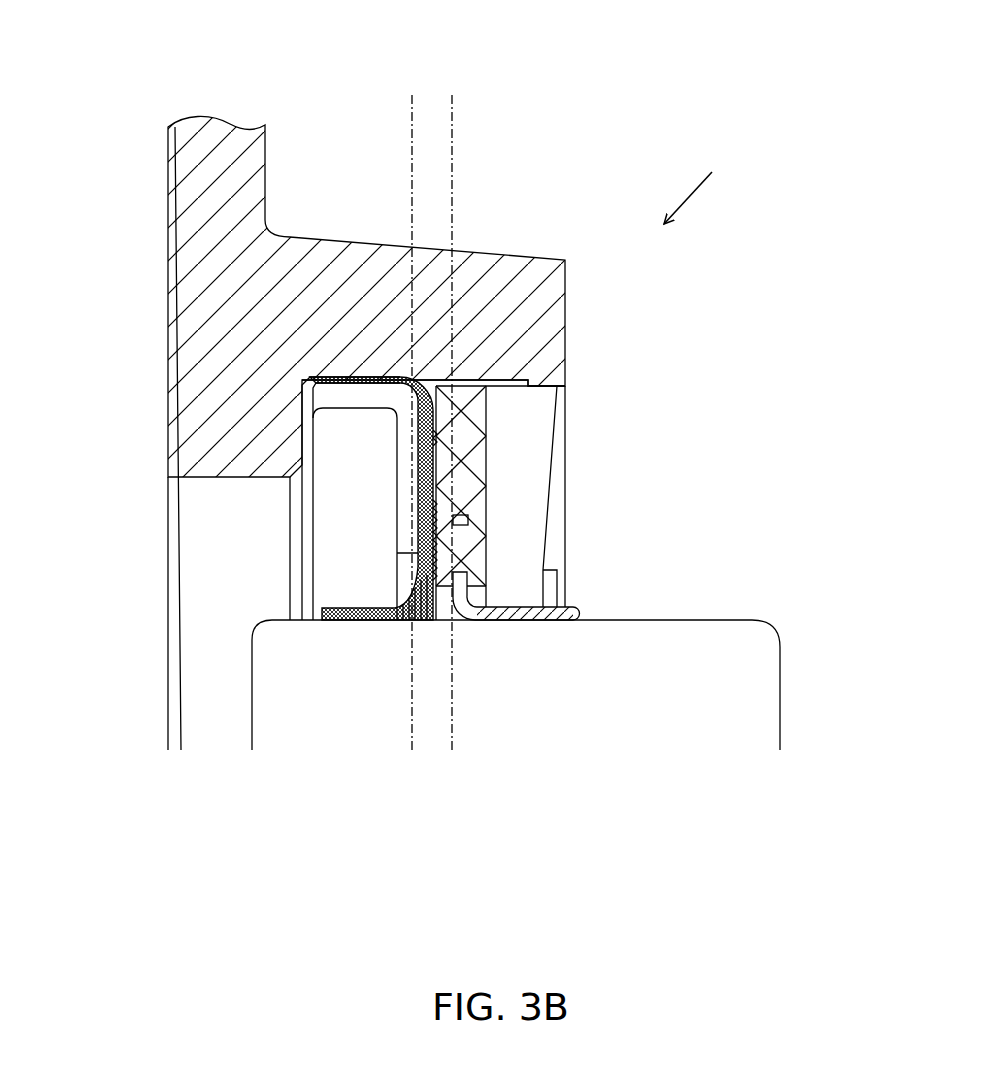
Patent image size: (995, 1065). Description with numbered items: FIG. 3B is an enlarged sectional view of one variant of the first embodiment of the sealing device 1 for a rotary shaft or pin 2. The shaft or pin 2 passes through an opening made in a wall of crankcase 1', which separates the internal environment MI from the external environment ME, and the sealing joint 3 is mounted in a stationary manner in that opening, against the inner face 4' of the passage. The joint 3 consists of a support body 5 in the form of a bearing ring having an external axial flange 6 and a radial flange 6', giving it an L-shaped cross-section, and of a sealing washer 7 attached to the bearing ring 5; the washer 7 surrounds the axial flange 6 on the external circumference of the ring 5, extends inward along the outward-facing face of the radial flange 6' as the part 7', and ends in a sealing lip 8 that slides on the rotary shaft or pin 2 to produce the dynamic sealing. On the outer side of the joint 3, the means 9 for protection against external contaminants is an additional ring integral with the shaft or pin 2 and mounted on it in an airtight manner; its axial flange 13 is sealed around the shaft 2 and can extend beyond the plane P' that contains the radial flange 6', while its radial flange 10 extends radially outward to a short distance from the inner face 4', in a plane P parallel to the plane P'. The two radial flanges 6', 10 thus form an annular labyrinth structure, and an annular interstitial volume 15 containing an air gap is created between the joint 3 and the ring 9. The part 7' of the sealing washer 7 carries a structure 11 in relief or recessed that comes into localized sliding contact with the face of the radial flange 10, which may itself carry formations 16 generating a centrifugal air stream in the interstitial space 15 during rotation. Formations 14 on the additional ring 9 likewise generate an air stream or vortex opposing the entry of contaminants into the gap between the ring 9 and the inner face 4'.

The sealing device 1 is at (699, 181).
The wall of crankcase 1' is at (366, 410).
The rotary shaft or pin 2 is at (757, 643).
The sealing joint 3 is at (93, 415).
The inner face of the passage 4' is at (433, 290).
The support body 5 is at (130, 442).
The external axial flange 6 is at (283, 498).
The radial flange 6' is at (276, 514).
The sealing washer 7 is at (271, 563).
The part of the sealing washer 7' is at (435, 505).
The sealing lip 8 is at (333, 623).
The means for protection against external contaminants 9 is at (630, 510).
The radial flange 10 is at (470, 520).
The structure in relief and/or recessed 11 is at (480, 525).
The axial flange 13 is at (563, 573).
The formations 14 is at (530, 412).
The annular interstitial volume 15 is at (438, 488).
The formations in relief and/or recessed 16 is at (437, 433).
The plane P is at (480, 414).
The plane P' is at (378, 413).
The internal environment MI is at (253, 560).
The external environment ME is at (737, 536).